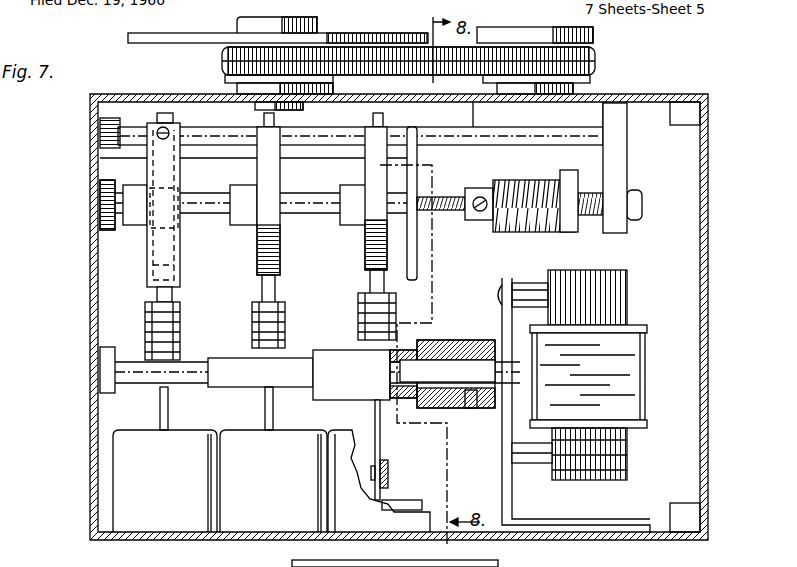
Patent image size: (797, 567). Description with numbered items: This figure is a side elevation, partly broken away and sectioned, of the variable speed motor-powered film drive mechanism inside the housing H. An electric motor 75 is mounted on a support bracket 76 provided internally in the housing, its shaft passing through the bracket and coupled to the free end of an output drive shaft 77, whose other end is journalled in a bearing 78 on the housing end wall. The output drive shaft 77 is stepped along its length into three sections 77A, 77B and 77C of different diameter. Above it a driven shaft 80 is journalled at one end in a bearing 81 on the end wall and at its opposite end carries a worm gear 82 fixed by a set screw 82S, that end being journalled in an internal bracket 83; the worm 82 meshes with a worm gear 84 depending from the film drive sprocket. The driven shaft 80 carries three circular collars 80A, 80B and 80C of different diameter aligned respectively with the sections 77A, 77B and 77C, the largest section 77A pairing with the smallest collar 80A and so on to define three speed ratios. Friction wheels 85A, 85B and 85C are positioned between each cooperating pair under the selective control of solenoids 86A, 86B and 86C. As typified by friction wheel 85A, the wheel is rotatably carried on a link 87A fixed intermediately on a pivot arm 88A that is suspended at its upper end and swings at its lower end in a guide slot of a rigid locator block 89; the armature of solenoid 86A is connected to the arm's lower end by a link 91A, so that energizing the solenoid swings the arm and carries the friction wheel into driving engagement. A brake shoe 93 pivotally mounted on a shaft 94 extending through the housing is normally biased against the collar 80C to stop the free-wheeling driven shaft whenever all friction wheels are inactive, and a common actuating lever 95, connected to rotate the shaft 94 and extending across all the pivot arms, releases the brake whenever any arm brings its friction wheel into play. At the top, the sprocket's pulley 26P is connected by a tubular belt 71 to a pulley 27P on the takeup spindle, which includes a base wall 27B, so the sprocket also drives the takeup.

The housing H is at (708, 300).
The base wall 27B is at (176, 44).
The pulley 27P is at (224, 70).
The pulley 26P is at (592, 79).
The tubular belt 71 is at (595, 62).
The shaft 94 is at (227, 118).
The driven shaft 80 is at (310, 203).
The bearing 81 is at (100, 183).
The brake shoe 93 is at (181, 190).
The circular collar 80C is at (150, 245).
The friction wheel 85C is at (157, 292).
The friction wheel 85B is at (262, 293).
The circular collar 80B is at (257, 245).
The friction wheel 85A is at (372, 290).
The circular collar 80A is at (365, 245).
The link 87A is at (396, 306).
The common actuating lever 95 is at (418, 246).
The worm gear 82 is at (490, 193).
The set screw 82S is at (482, 212).
The worm gear 84 is at (563, 180).
The internal bracket 83 is at (627, 168).
The shaft section 77C is at (142, 378).
The output drive shaft 77 is at (312, 399).
The bearing 78 is at (100, 392).
The shaft section 77B is at (240, 344).
The shaft section 77A is at (342, 355).
The solenoid 86C is at (180, 504).
The solenoid 86B is at (280, 499).
The solenoid 86A is at (372, 513).
The pivot arm 88A is at (375, 413).
The link 91A is at (386, 465).
The locator block 89 is at (408, 498).
The support bracket 76 is at (505, 492).
The electric motor 75 is at (638, 362).